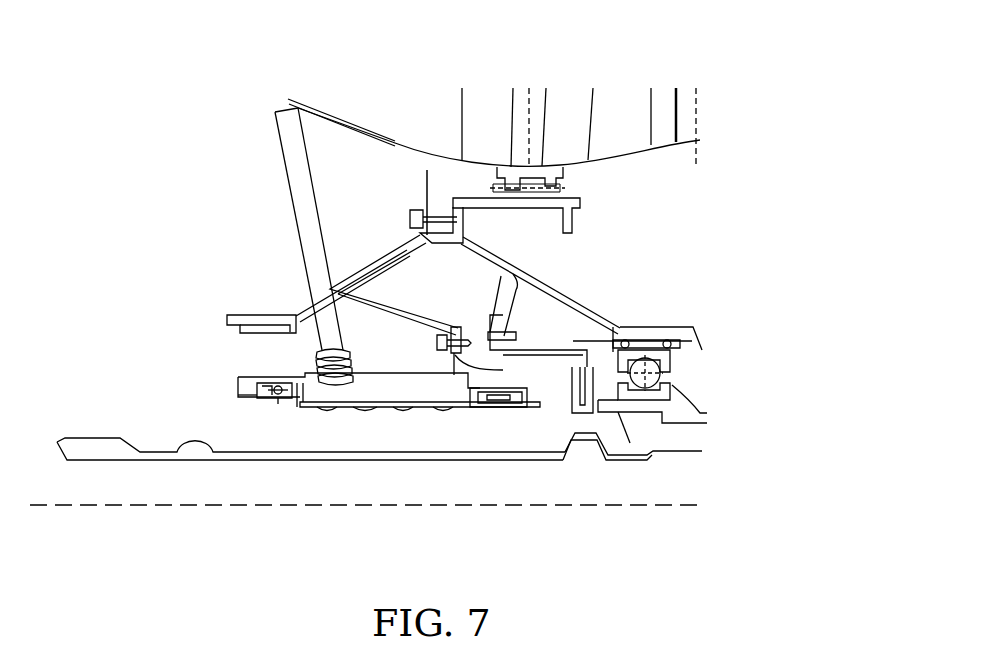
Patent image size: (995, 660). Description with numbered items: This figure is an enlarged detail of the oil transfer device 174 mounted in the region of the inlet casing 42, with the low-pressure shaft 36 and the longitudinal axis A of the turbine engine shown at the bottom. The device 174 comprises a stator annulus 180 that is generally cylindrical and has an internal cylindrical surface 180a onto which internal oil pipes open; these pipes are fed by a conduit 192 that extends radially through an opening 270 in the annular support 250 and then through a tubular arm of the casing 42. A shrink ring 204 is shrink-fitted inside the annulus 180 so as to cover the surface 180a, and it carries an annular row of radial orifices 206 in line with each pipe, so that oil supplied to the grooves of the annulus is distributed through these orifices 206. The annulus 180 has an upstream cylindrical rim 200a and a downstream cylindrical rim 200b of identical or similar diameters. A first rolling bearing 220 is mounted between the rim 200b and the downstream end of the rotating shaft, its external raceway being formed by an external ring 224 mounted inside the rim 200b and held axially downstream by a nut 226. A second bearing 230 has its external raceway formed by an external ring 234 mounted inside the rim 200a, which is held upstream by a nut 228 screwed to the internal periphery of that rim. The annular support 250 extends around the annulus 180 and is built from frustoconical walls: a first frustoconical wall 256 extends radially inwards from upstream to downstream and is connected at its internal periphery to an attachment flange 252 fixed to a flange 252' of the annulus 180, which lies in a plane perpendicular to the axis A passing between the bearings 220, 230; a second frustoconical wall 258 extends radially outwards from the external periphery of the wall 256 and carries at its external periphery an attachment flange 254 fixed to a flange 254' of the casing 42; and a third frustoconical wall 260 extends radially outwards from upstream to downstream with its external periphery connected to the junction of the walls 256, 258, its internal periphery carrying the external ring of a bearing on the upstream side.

The inlet casing 42 is at (480, 57).
The flange of the casing 254' is at (488, 124).
The attachment flange 254 is at (388, 187).
The conduit 192 is at (307, 200).
The second frustoconical wall 258 is at (390, 257).
The first frustoconical wall 256 is at (400, 300).
The opening 270 is at (330, 298).
The third frustoconical wall 260 is at (300, 310).
The annular support 250 is at (466, 311).
The attachment flange 252 is at (593, 358).
The flange of the annulus 252' is at (428, 346).
The upstream cylindrical rim 200a is at (505, 383).
The downstream cylindrical rim 200b is at (272, 387).
The nut 228 is at (240, 397).
The external ring 234 is at (273, 393).
The bearing 230 is at (273, 413).
The oil transfer device 174 is at (238, 426).
The low-pressure shaft 36 is at (278, 473).
The internal cylindrical surface 180a is at (345, 408).
The stator annulus 180 is at (370, 430).
The radial orifices 206 is at (440, 407).
The shrink ring 204 is at (437, 413).
The first rolling bearing 220 is at (488, 415).
The external ring 224 is at (505, 405).
The nut 226 is at (522, 413).
The longitudinal axis A is at (647, 507).